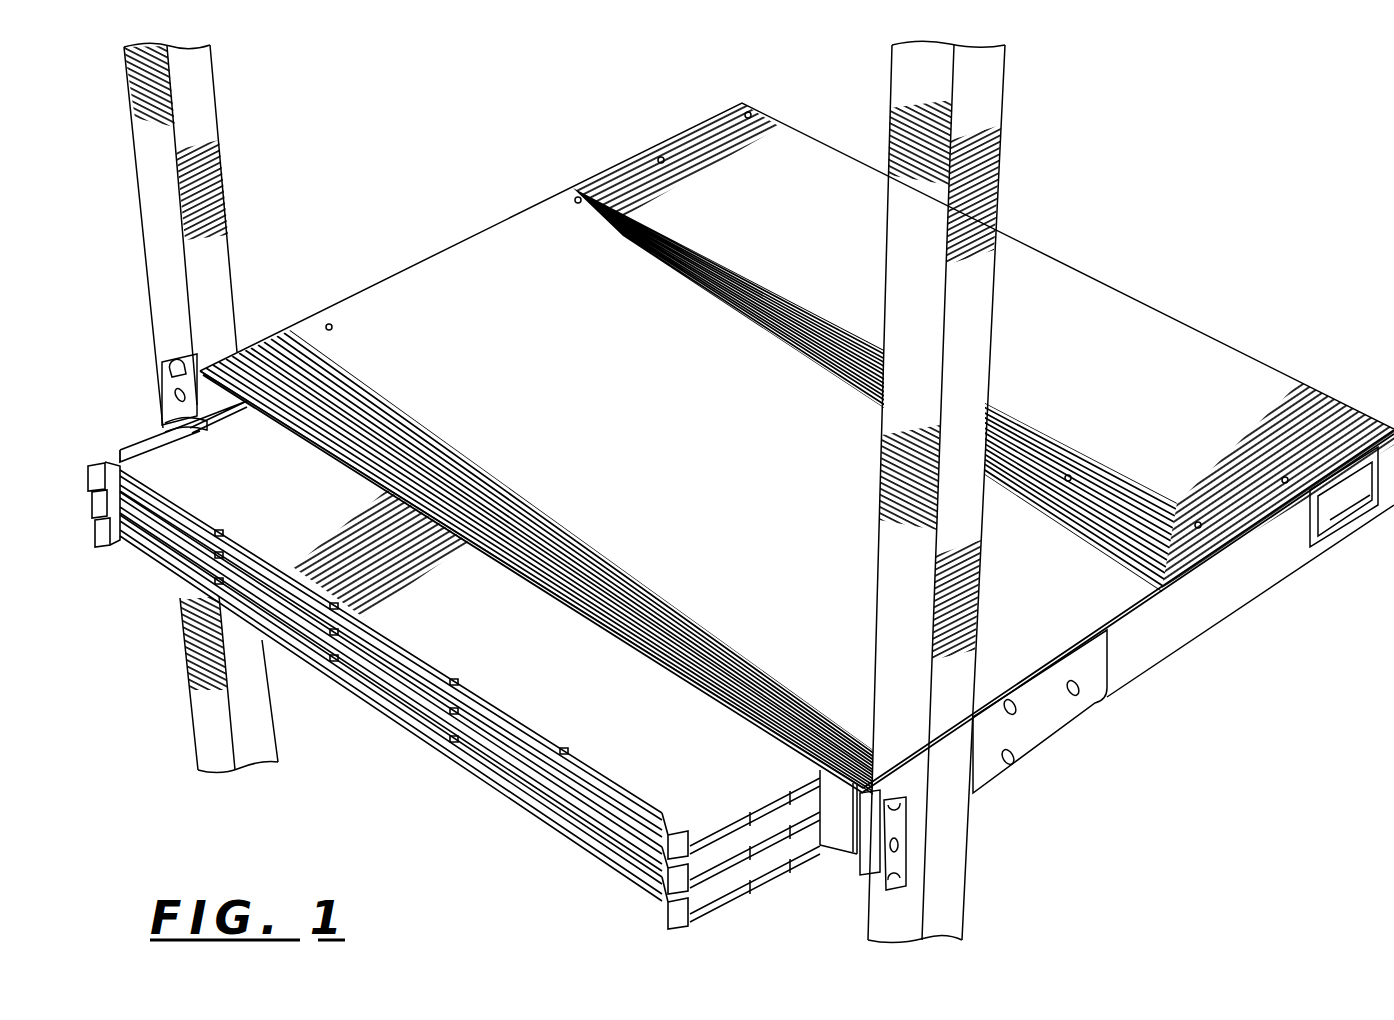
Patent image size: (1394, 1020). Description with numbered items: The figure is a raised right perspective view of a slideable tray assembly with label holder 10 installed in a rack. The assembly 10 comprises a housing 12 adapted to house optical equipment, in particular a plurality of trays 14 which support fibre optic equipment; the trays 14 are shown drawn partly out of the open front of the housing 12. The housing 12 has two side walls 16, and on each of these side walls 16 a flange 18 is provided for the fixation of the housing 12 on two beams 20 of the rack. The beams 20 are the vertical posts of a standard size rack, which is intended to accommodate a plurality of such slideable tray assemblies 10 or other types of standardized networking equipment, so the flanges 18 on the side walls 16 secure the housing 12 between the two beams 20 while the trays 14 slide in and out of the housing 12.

The slideable tray assembly with label holder 10 is at (1196, 268).
The housing 12 is at (470, 312).
The trays 14 is at (732, 892).
The side walls 16 is at (1213, 594).
The flange 18 is at (177, 382).
The beams 20 is at (160, 193).